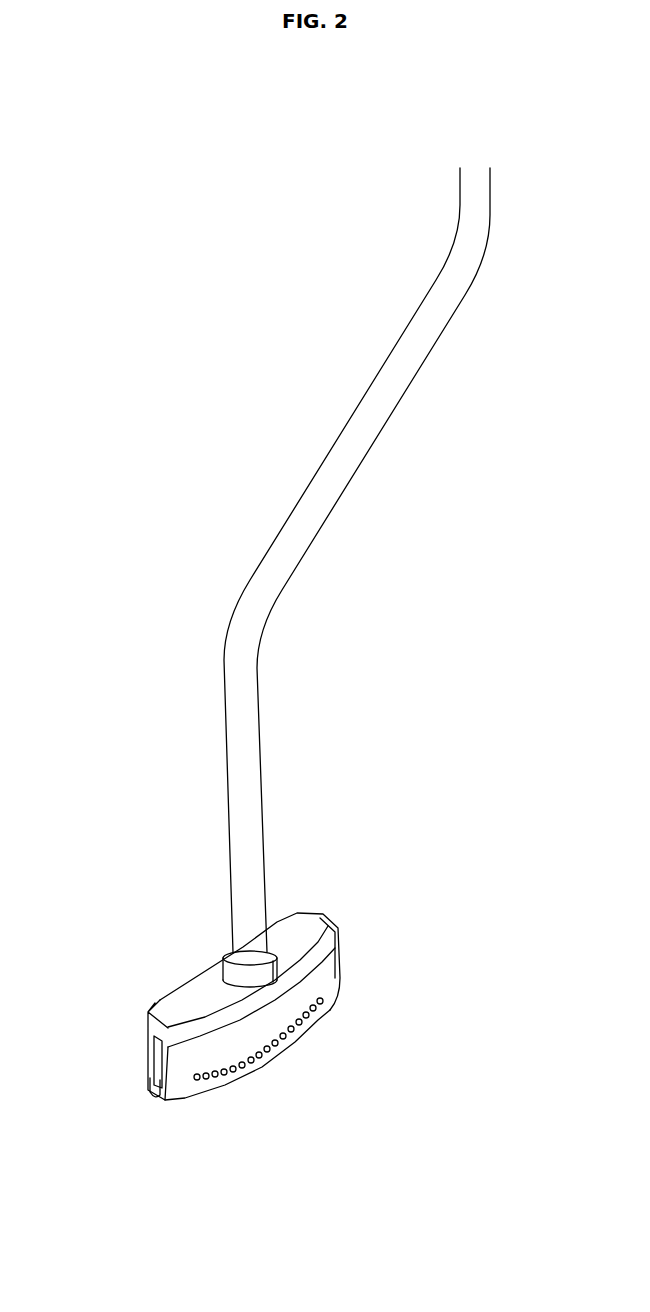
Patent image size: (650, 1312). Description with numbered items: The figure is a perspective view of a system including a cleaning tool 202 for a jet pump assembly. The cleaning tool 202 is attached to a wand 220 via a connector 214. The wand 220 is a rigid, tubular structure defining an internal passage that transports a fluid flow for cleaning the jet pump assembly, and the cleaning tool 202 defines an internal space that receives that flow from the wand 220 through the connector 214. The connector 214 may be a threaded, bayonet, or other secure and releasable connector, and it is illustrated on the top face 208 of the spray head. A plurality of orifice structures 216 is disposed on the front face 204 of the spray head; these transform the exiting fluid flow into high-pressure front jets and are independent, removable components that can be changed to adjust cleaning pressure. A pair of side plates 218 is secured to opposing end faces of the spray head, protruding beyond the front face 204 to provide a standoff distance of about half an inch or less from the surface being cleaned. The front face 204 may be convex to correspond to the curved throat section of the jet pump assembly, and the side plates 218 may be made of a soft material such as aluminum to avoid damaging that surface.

The cleaning tool 202 is at (302, 1038).
The front face 204 is at (325, 970).
The top face 208 is at (183, 1003).
The connector 214 is at (233, 978).
The orifice structures 216 is at (225, 1075).
The side plates 218 is at (347, 938).
The wand 220 is at (347, 482).